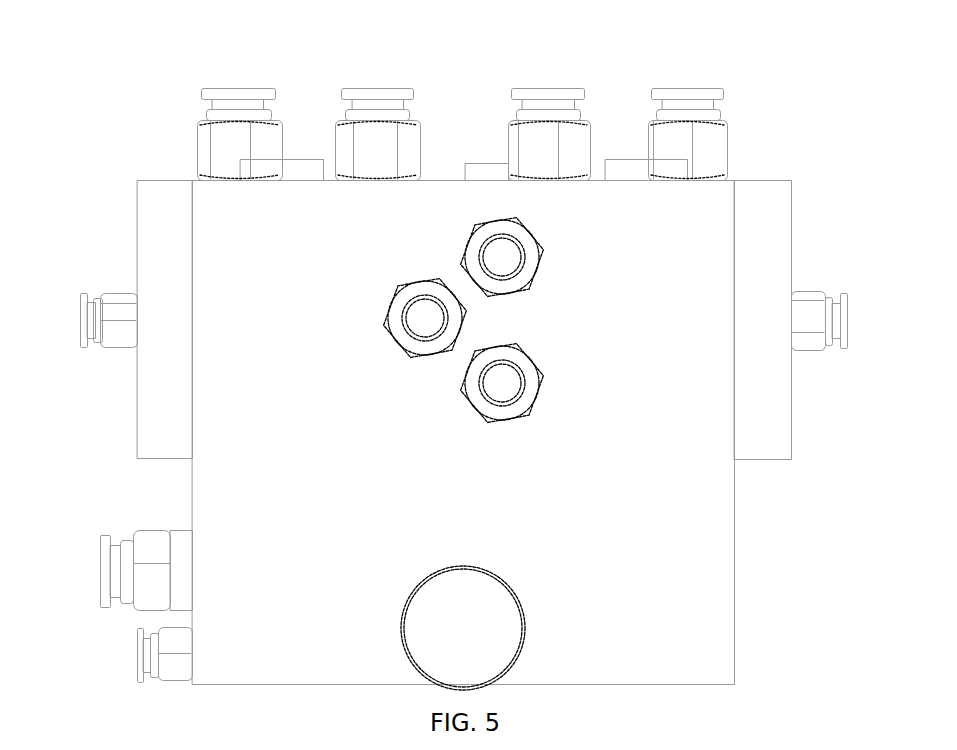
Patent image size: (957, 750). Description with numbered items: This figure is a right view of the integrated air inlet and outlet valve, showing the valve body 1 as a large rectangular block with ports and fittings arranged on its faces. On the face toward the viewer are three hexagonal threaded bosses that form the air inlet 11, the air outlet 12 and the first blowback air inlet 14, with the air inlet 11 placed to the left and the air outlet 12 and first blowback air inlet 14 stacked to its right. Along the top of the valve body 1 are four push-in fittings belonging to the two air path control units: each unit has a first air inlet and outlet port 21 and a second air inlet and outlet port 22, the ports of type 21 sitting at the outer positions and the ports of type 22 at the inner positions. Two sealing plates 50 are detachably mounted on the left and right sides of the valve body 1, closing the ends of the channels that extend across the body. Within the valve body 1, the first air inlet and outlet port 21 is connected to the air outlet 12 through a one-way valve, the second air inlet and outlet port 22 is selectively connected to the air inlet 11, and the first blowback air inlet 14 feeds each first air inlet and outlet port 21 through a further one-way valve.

The valve body 1 is at (697, 558).
The air inlet 11 is at (425, 318).
The air outlet 12 is at (503, 383).
The first blowback air inlet 14 is at (503, 257).
The first air inlet and outlet port 21 is at (238, 88).
The second air inlet and outlet port 22 is at (377, 88).
The sealing plate 50 is at (160, 410).